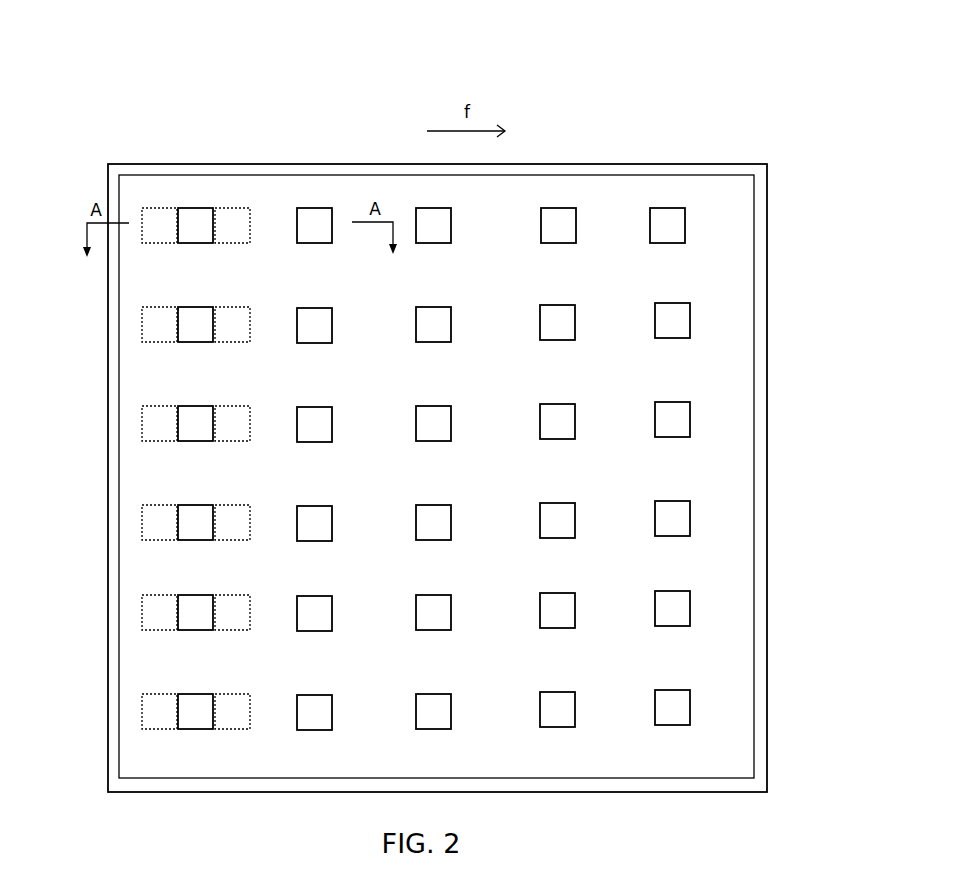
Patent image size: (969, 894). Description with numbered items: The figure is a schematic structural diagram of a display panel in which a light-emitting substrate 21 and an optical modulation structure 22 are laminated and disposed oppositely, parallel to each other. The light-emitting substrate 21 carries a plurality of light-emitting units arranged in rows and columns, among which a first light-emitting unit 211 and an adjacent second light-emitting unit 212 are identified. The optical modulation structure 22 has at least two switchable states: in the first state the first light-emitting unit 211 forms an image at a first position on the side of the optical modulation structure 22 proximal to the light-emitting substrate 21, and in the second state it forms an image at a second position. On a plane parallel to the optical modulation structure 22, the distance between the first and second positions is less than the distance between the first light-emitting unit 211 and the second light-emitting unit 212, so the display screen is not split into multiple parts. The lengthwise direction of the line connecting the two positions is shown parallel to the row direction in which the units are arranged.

The light-emitting substrate 21 is at (237, 122).
The first light-emitting unit 211 is at (192, 200).
The second light-emitting unit 212 is at (315, 200).
The optical modulation structure 22 is at (378, 164).